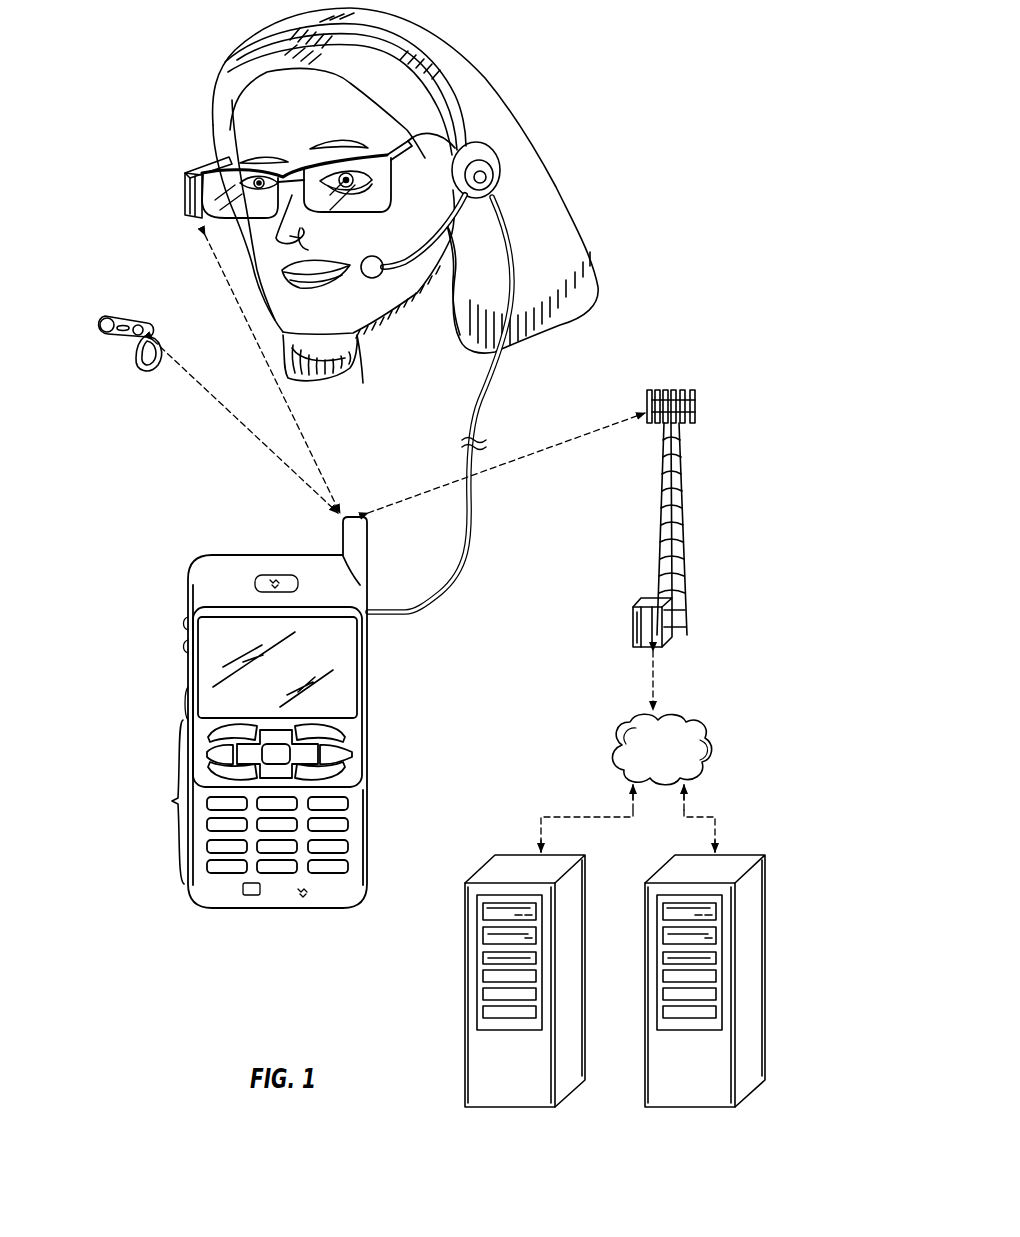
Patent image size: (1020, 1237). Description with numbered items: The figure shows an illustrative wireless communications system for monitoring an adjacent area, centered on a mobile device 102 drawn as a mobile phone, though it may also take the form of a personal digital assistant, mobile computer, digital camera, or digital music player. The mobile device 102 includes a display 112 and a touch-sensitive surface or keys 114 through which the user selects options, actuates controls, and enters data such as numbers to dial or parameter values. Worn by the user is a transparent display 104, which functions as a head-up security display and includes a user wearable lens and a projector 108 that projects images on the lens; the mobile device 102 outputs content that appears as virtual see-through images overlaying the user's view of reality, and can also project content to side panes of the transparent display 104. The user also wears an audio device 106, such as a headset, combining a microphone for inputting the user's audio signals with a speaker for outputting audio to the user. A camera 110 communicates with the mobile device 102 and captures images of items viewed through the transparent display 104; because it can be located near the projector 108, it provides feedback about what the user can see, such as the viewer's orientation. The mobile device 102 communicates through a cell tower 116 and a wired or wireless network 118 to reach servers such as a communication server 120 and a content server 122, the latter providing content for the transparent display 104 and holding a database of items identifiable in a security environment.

The mobile device 102 is at (230, 908).
The transparent display 104 is at (190, 210).
The audio device 106 is at (500, 182).
The projector 108 is at (208, 165).
The camera 110 is at (105, 318).
The display 112 is at (343, 680).
The keys 114 is at (178, 803).
The cell tower 116 is at (685, 505).
The network 118 is at (712, 735).
The communication server 120 is at (465, 996).
The content server 122 is at (765, 975).